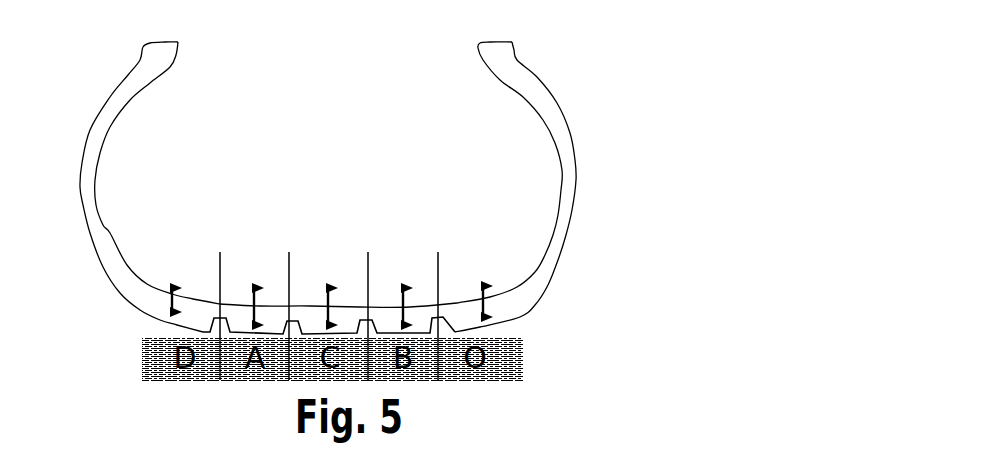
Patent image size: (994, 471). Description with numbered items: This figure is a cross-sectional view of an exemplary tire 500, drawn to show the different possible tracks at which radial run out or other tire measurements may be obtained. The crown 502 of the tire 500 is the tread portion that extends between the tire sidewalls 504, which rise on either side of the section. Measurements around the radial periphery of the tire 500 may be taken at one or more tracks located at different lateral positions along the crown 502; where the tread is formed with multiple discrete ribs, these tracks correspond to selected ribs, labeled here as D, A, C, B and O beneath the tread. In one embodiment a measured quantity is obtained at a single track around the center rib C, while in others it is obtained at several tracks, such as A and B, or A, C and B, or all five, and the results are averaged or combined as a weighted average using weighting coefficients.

The tire 500 is at (346, 175).
The crown 502 is at (527, 305).
The tire sidewalls 504 is at (83, 182).